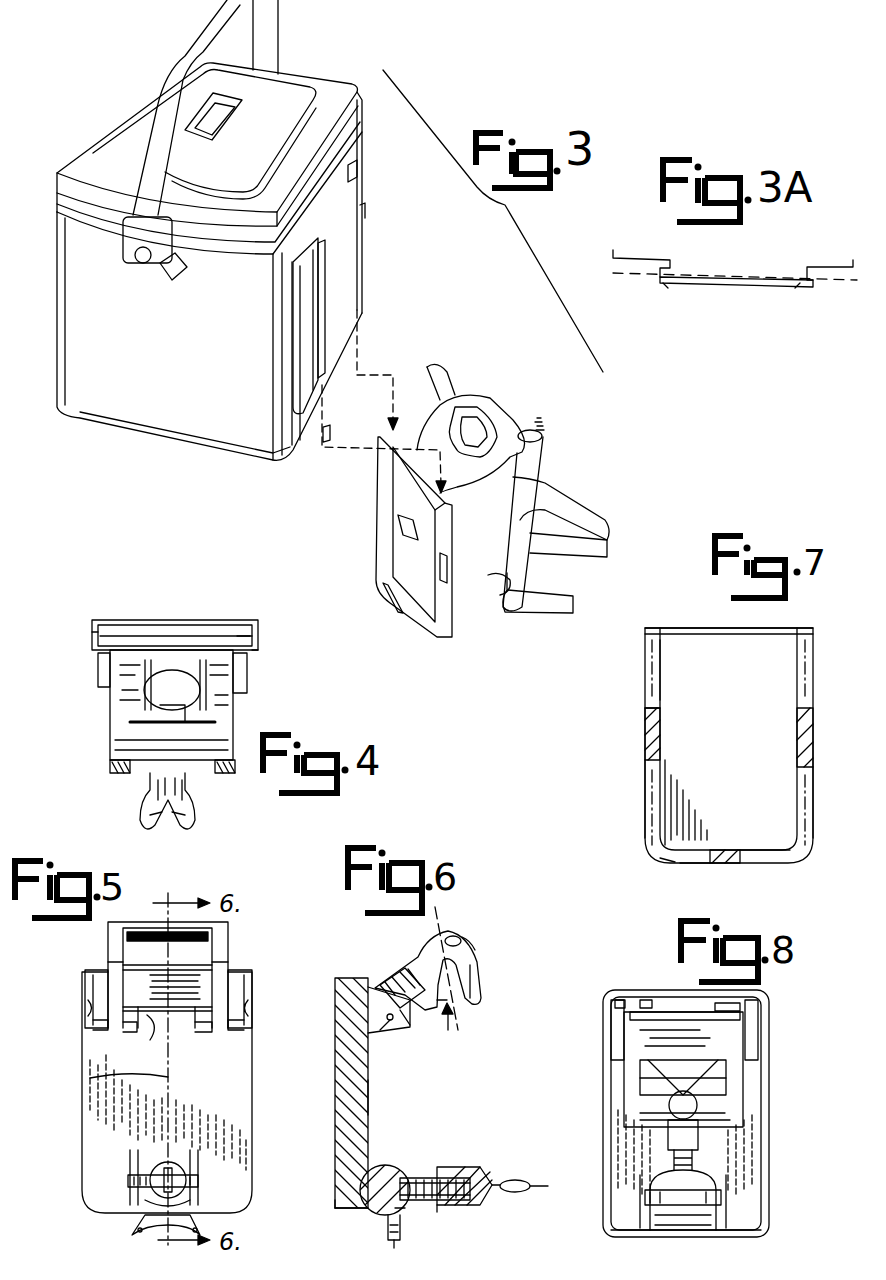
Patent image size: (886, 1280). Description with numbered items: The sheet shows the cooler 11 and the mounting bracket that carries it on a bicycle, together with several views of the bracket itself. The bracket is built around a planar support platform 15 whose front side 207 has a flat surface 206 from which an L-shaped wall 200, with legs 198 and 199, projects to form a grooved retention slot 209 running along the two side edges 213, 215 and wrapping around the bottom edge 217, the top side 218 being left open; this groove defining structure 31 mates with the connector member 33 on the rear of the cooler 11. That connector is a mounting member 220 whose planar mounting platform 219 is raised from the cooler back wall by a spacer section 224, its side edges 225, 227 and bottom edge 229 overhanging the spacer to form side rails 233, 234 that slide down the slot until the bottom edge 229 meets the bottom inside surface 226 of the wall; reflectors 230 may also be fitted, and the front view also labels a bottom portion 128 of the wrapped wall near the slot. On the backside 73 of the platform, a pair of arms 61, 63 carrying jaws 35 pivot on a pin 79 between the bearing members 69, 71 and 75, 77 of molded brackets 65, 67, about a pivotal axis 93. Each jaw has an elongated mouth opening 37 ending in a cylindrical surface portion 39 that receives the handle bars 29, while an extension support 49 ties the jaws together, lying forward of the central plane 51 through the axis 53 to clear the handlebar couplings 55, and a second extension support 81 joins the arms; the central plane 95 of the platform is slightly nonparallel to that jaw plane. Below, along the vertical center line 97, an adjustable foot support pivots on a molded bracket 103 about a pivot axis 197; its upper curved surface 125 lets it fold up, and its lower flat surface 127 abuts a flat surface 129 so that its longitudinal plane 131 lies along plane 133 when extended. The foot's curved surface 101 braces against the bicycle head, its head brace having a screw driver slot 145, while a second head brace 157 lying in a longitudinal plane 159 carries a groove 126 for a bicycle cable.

In FIG. 3, the cooler 11 is at (323, 57).
In FIG. 6, the planar support platform 15 is at (340, 1107).
In FIG. 8, the planar support platform 15 is at (769, 1158).
In FIG. 3, the handle bars 29 is at (573, 505).
In FIG. 3, the groove defining structure 31 is at (375, 508).
In FIG. 3, the connector member 33 is at (416, 283).
In FIG. 3, the jaws 35 is at (520, 457).
In FIG. 6, the jaws 35 is at (465, 943).
In FIG. 6, the mouth opening 37 is at (445, 1012).
In FIG. 6, the cylindrical surface portion 39 is at (418, 945).
In FIG. 3, the extension support 49 is at (497, 427).
In FIG. 6, the extension support 49 is at (452, 937).
In FIG. 8, the extension support 49 is at (708, 1105).
In FIG. 6, the central plane 51 is at (462, 1018).
In FIG. 6, the axis 53 is at (477, 967).
In FIG. 3, the handlebar couplings 55 is at (477, 438).
In FIG. 5, the arm 61 is at (113, 1005).
In FIG. 8, the arm 61 is at (634, 1078).
In FIG. 5, the arm 63 is at (220, 1017).
In FIG. 6, the arm 63 is at (410, 968).
In FIG. 8, the arm 63 is at (736, 1083).
In FIG. 8, the molded bracket 65 is at (643, 1000).
In FIG. 8, the molded bracket 67 is at (740, 1008).
In FIG. 5, the bearing member 69 is at (100, 1012).
In FIG. 5, the bearing member 71 is at (127, 1027).
In FIG. 6, the backside 73 is at (370, 1102).
In FIG. 8, the backside 73 is at (619, 1200).
In FIG. 5, the bearing member 75 is at (240, 1028).
In FIG. 5, the bearing member 77 is at (213, 1030).
In FIG. 5, the pin 79 is at (153, 1017).
In FIG. 6, the second extension support 81 is at (400, 1013).
In FIG. 6, the pivotal axis 93 is at (375, 1020).
In FIG. 6, the central plane 95 is at (352, 1210).
In FIG. 5, the vertical center line 97 is at (167, 1077).
In FIG. 4, the curved surface 101 is at (180, 807).
In FIG. 8, the molded bracket 103 is at (705, 1228).
In FIG. 6, the upper curved surface 125 is at (380, 1163).
In FIG. 6, the groove 126 is at (437, 1207).
In FIG. 6, the lower flat surface 127 is at (385, 1208).
In FIG. 7, the bottom plate 128 is at (740, 855).
In FIG. 6, the flat surface 129 is at (338, 1195).
In FIG. 6, the longitudinal plane 131 is at (530, 1165).
In FIG. 6, the plane 133 is at (450, 1227).
In FIG. 5, the slot 145 is at (152, 1175).
In FIG. 5, the second head brace 157 is at (187, 1193).
In FIG. 6, the second head brace 157 is at (397, 1212).
In FIG. 6, the longitudinal plane 159 is at (398, 1230).
In FIG. 6, the pivot axis 197 is at (400, 1163).
In FIG. 4, the leg 198 is at (100, 623).
In FIG. 4, the leg 199 is at (90, 637).
In FIG. 4, the L-shaped wall 200 is at (92, 622).
In FIG. 7, the flat surface 206 is at (745, 738).
In FIG. 4, the front side 207 is at (153, 643).
In FIG. 7, the front side 207 is at (690, 687).
In FIG. 4, the grooved retention slot 209 is at (237, 640).
In FIG. 7, the grooved retention slot 209 is at (637, 673).
In FIG. 4, the side edge 213 is at (85, 647).
In FIG. 7, the side edge 213 is at (640, 783).
In FIG. 4, the side edge 215 is at (257, 658).
In FIG. 7, the side edge 215 is at (815, 785).
In FIG. 7, the bottom edge 217 is at (683, 865).
In FIG. 7, the top side 218 is at (777, 628).
In FIG. 3, the planar mounting platform 219 is at (355, 174).
In FIG. 3A, the planar mounting platform 219 is at (730, 283).
In FIG. 3, the mounting member 220 is at (345, 252).
In FIG. 3, the spacer section 224 is at (303, 280).
In FIG. 3, the side edge 225 is at (323, 312).
In FIG. 3A, the side edge 225 is at (665, 283).
In FIG. 7, the bottom inside surface 226 is at (677, 858).
In FIG. 3, the side edge 227 is at (363, 213).
In FIG. 3A, the side edge 227 is at (813, 283).
In FIG. 3, the bottom edge 229 is at (343, 340).
In FIG. 3, the reflectors 230 is at (403, 530).
In FIG. 7, the reflectors 230 is at (647, 735).
In FIG. 3A, the side rail 233 is at (668, 286).
In FIG. 3A, the side rail 234 is at (797, 288).